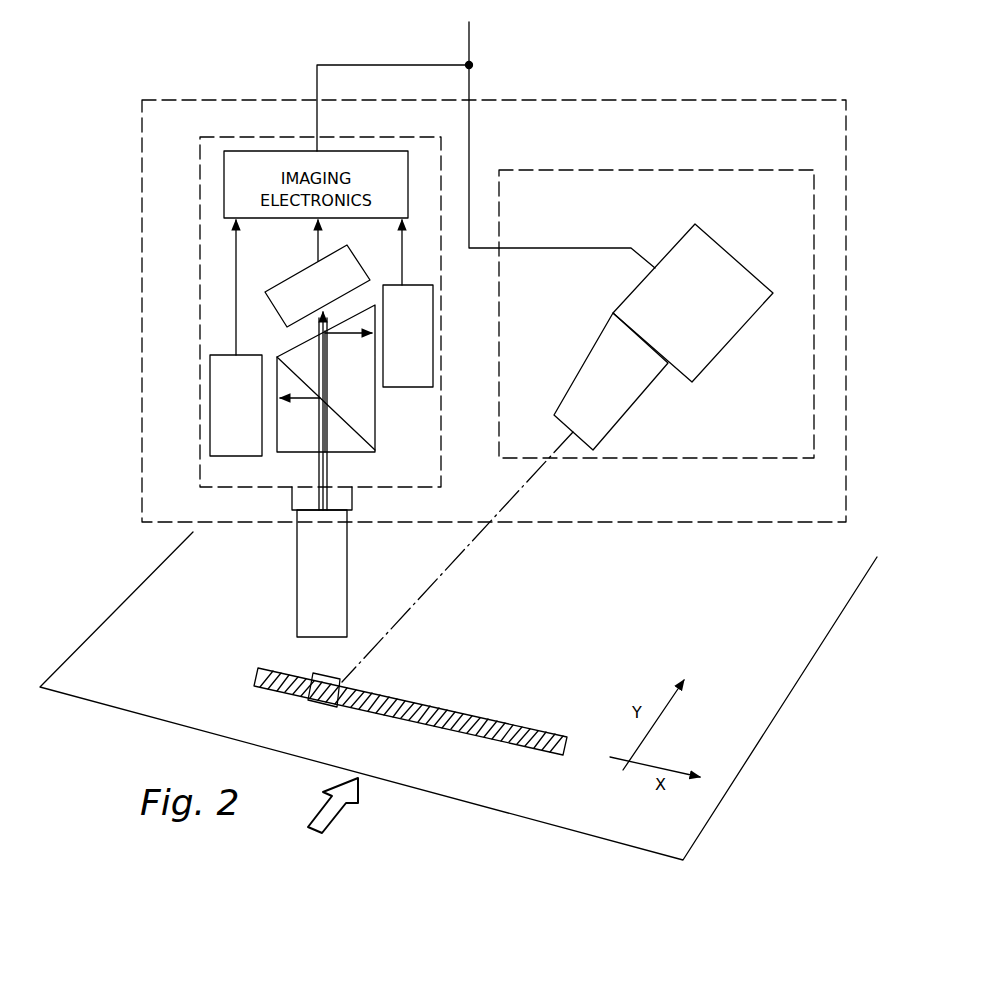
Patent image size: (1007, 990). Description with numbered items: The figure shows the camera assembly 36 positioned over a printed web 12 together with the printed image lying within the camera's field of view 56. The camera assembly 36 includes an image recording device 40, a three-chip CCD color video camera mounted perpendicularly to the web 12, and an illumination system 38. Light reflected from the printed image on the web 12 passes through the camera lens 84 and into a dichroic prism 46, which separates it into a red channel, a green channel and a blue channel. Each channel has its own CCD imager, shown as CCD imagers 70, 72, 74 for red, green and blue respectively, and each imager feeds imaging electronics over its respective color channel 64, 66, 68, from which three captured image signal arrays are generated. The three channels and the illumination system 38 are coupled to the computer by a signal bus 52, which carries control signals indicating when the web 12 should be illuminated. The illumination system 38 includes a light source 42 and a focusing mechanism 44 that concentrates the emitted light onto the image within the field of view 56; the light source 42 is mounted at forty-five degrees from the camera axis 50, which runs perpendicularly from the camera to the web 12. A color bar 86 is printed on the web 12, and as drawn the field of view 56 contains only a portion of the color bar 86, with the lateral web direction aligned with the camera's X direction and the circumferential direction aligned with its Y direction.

The web 12 is at (710, 826).
The camera assembly 36 is at (599, 98).
The illumination system 38 is at (815, 208).
The image recording device 40 is at (243, 134).
The light source 42 is at (698, 377).
The focusing mechanism 44 is at (590, 377).
The dichroic prism 46 is at (360, 456).
The camera axis 50 is at (322, 660).
The signal bus 52 is at (471, 34).
The field of view 56 is at (343, 680).
The color channel 64 is at (250, 287).
The color channel 66 is at (334, 240).
The color channel 68 is at (416, 252).
The CCD imager 70 is at (239, 394).
The CCD imager 72 is at (316, 286).
The CCD imager 74 is at (408, 322).
The camera lens 84 is at (351, 576).
The color bar 86 is at (558, 760).